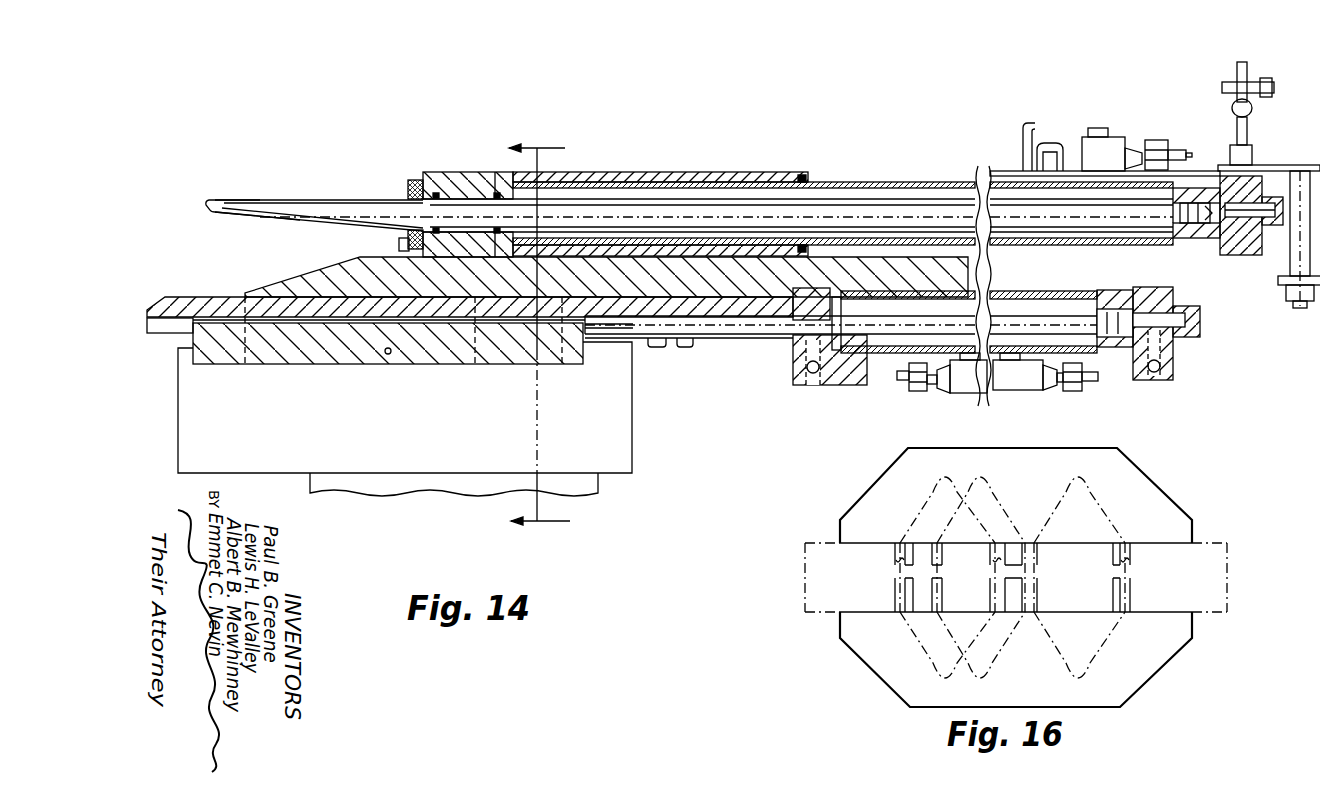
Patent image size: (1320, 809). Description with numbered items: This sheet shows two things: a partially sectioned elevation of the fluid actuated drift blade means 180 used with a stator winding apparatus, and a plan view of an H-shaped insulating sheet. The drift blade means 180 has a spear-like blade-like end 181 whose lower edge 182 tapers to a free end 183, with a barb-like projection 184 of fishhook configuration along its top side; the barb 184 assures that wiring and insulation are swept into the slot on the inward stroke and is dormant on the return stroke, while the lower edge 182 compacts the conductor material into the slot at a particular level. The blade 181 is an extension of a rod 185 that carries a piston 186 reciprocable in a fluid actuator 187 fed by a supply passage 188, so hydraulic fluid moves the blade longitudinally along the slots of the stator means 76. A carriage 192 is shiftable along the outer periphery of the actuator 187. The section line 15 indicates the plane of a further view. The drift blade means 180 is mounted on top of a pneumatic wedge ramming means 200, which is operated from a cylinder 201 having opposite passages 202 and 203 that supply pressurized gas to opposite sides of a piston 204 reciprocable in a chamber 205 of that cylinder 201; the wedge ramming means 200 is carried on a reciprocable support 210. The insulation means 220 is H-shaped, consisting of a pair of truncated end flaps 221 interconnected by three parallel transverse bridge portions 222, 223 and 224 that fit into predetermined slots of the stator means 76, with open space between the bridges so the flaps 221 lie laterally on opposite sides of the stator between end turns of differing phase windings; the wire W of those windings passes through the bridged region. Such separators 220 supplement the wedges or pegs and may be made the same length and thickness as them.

In FIG. 14, the section line 15- 15 is at (539, 338).
In FIG. 14, the blade-like end 181 is at (302, 203).
In FIG. 14, the lower edge 182 is at (263, 220).
In FIG. 14, the free end 183 is at (207, 200).
In FIG. 14, the barb-like projection 184 is at (224, 199).
In FIG. 14, the drift blade means 180 is at (378, 200).
In FIG. 14, the rod 185 is at (640, 210).
In FIG. 14, the carriage 192 is at (748, 173).
In FIG. 14, the fluid actuator 187 is at (895, 180).
In FIG. 14, the piston 186 is at (1193, 190).
In FIG. 14, the supply passage 188 is at (1245, 250).
In FIG. 14, the pneumatic wedge ramming means 200 is at (283, 287).
In FIG. 14, the reciprocable support 210 is at (617, 432).
In FIG. 14, the passage 202 is at (813, 385).
In FIG. 14, the cylinder 201 is at (883, 353).
In FIG. 14, the chamber 205 is at (1010, 310).
In FIG. 14, the piston 204 is at (1107, 303).
In FIG. 14, the passage 203 is at (1152, 377).
In FIG. 16, the H shaped insulation means 220 is at (1152, 492).
In FIG. 16, the truncated end flaps 221 is at (925, 690).
In FIG. 16, the transverse bridge portion 222 is at (896, 560).
In FIG. 16, the transverse bridge portion 223 is at (993, 560).
In FIG. 16, the transverse bridge portion 224 is at (1121, 560).
In FIG. 16, the stator means 76 is at (805, 590).
In FIG. 16, the wire W is at (1133, 631).